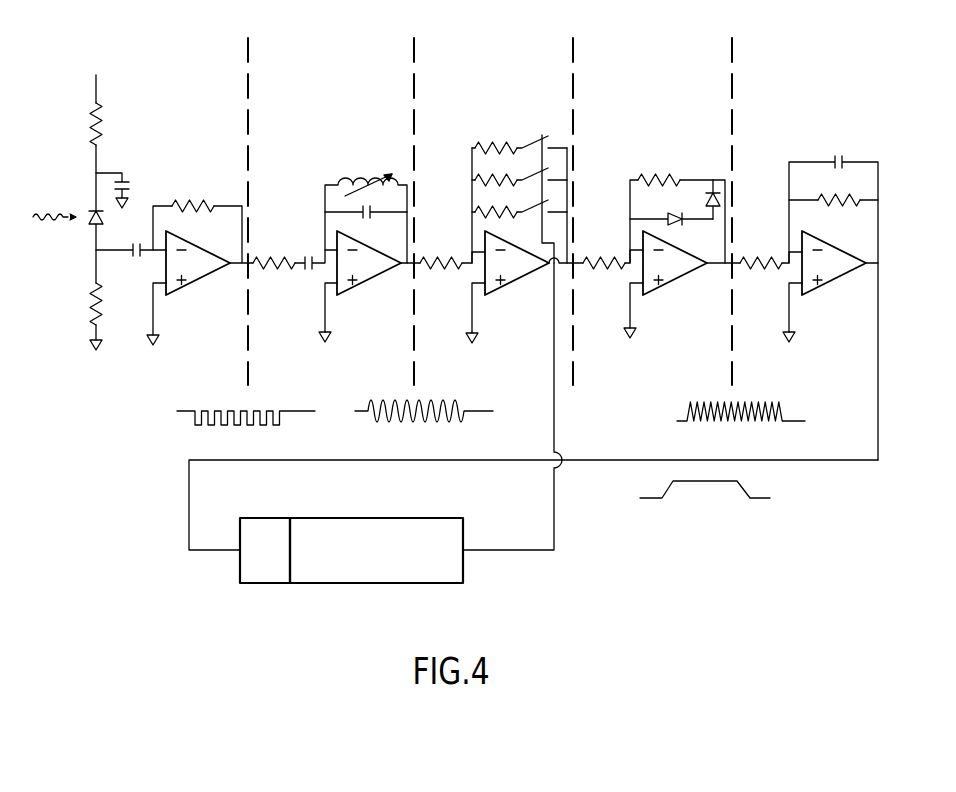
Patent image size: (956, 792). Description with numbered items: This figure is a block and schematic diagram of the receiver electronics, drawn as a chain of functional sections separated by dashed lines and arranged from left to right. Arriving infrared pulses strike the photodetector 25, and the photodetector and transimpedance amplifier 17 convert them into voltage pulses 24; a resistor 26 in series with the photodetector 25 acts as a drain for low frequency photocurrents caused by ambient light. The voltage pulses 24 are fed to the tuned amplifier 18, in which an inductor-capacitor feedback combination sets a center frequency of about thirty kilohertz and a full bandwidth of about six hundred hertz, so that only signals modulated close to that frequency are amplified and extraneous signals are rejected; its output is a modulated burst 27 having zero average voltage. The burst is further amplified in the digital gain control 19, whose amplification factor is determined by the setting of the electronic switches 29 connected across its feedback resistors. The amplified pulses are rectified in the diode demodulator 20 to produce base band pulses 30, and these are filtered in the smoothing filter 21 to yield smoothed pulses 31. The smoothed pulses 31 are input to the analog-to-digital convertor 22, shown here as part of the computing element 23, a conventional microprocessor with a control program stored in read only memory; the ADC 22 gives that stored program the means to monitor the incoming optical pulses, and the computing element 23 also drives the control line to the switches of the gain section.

The photodetector and transimpedance amplifier 17 is at (143, 191).
The tuned amplifier 18 is at (369, 180).
The digital gain control 19 is at (554, 181).
The diode demodulator 20 is at (713, 178).
The smoothing filter 21 is at (830, 239).
The analog-to-digital convertor (ADC) 22 is at (258, 518).
The computing element 23 is at (363, 518).
The voltage pulses 24 is at (253, 275).
The photodetector 25 is at (87, 205).
The resistor 26 is at (83, 313).
The modulated burst 27 is at (420, 275).
The electronic switches 29 is at (538, 134).
The base band pulses 30 is at (738, 275).
The smoothed pulses 31 is at (708, 461).